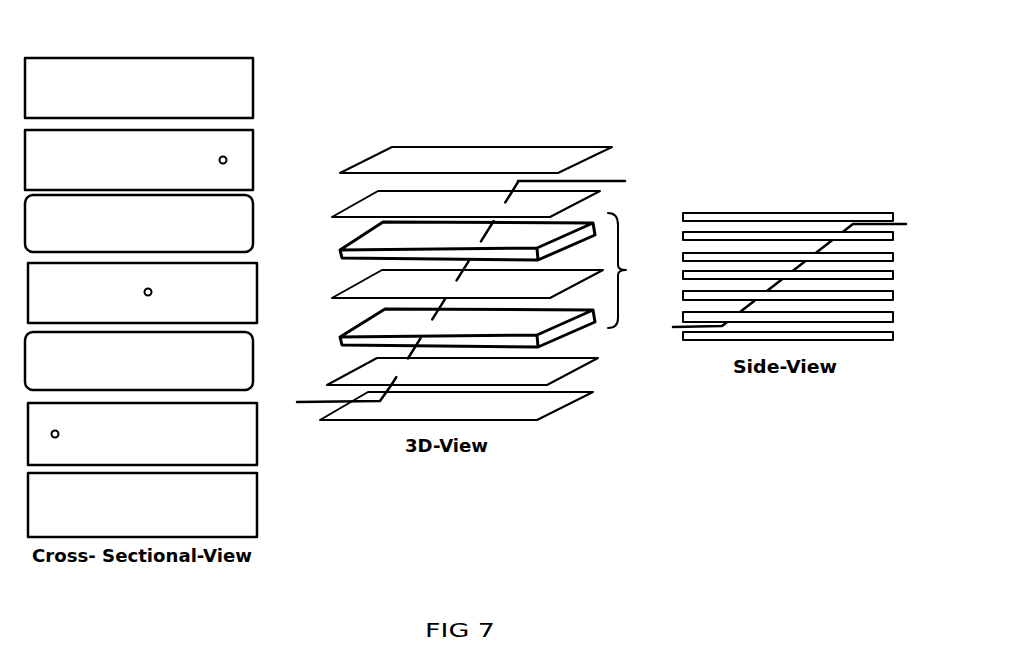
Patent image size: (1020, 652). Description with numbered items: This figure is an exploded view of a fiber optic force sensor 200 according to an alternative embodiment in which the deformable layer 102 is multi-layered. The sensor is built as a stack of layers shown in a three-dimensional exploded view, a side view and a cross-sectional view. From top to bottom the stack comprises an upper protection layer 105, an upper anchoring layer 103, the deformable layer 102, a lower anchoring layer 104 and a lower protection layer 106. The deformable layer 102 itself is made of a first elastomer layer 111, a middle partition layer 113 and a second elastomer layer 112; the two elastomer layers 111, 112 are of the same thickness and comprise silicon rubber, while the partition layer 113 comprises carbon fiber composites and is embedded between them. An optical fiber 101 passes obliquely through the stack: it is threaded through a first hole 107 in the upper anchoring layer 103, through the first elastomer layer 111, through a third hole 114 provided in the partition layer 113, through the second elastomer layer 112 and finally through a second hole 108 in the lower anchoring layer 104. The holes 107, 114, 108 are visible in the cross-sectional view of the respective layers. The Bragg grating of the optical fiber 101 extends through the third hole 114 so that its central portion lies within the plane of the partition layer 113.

The force sensor 200 is at (663, 98).
The optical fiber 101 is at (605, 180).
The deformable layer 102 is at (640, 270).
The upper anchoring layer 103 is at (352, 207).
The lower anchoring layer 104 is at (338, 383).
The upper protection layer 105 is at (432, 146).
The lower protection layer 106 is at (325, 423).
The first hole 107 is at (219, 160).
The second hole 108 is at (59, 434).
The first elastomer layer 111 is at (340, 251).
The second elastomer layer 112 is at (340, 337).
The partition layer 113 is at (343, 290).
The third hole 114 is at (144, 292).